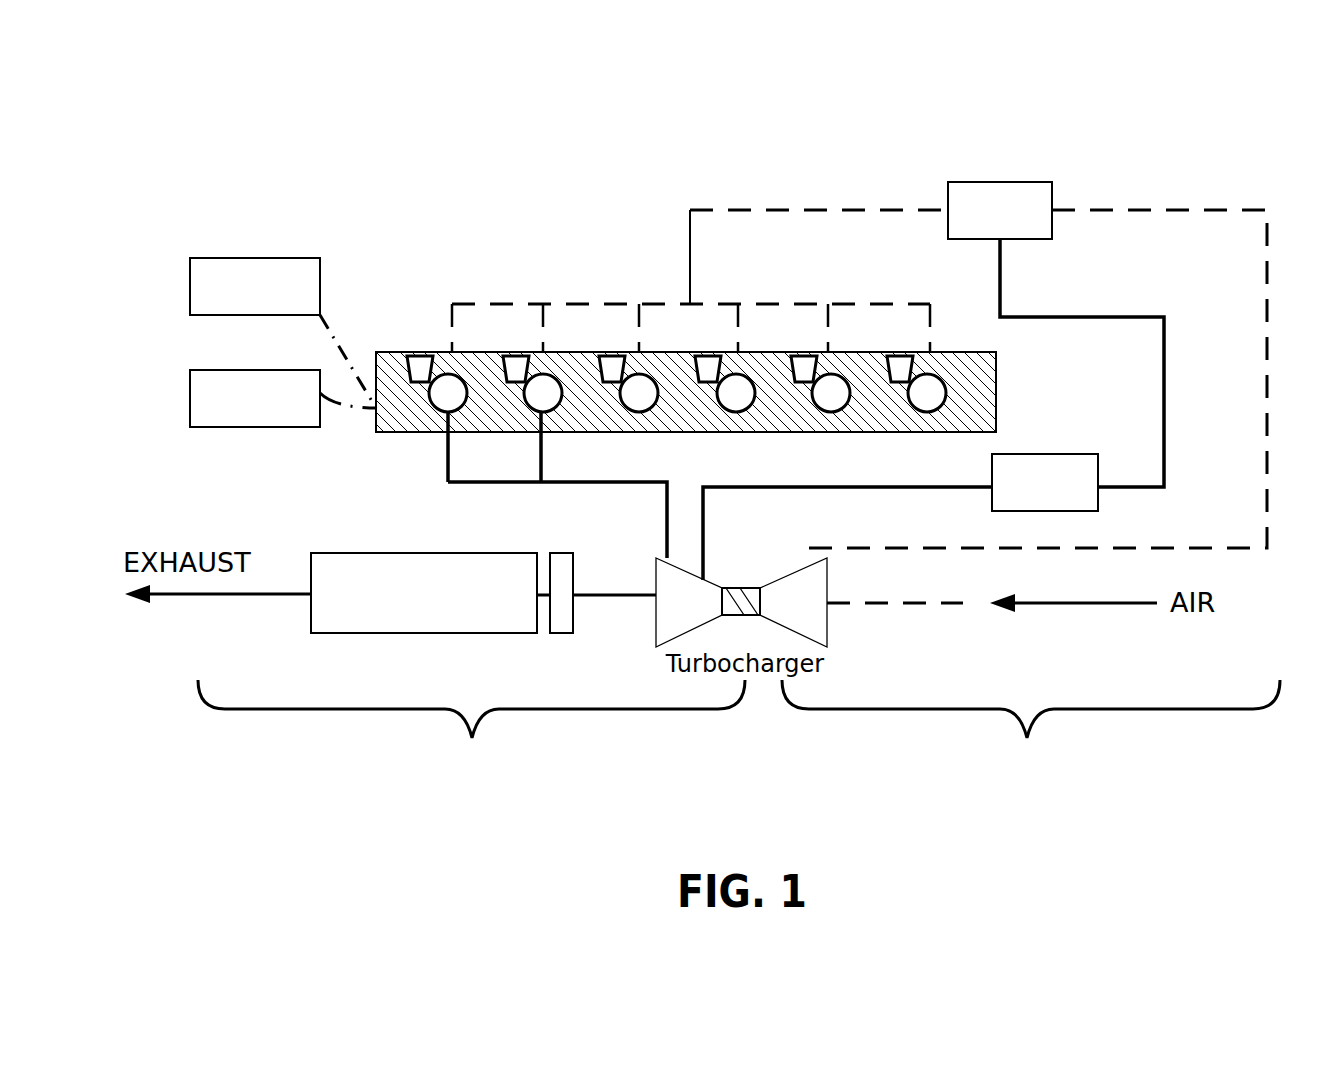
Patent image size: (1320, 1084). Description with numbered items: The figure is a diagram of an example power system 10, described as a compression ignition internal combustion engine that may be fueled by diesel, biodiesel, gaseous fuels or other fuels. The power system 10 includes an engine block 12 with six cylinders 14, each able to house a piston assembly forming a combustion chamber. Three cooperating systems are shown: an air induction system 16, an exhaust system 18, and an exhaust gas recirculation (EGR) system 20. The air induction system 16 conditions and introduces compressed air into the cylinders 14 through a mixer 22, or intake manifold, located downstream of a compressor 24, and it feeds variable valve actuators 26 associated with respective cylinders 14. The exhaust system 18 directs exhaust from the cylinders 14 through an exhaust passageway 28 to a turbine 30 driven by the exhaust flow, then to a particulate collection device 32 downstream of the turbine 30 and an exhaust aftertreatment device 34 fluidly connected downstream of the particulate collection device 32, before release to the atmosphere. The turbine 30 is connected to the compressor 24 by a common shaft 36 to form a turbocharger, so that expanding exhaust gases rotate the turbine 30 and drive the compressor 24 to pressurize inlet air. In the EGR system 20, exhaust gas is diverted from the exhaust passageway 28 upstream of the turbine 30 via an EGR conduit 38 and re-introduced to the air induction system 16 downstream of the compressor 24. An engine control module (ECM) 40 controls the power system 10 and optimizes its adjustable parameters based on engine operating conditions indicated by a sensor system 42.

The power system 10 is at (376, 173).
The engine block 12 is at (383, 352).
The cylinders 14 is at (619, 390).
The air induction system 16 is at (866, 490).
The exhaust system 18 is at (471, 725).
The exhaust gas recirculation (EGR) system 20 is at (1060, 454).
The mixer 22 is at (1013, 182).
The compressor 24 is at (827, 625).
The variable valve actuators 26 is at (785, 355).
The exhaust passageway 28 is at (667, 527).
The turbine 30 is at (656, 625).
The particulate collection device 32 is at (566, 628).
The exhaust aftertreatment device 34 is at (358, 553).
The common shaft 36 is at (745, 588).
The EGR conduit 38 is at (965, 487).
The engine control module (ECM) 40 is at (283, 398).
The sensor system 42 is at (283, 333).